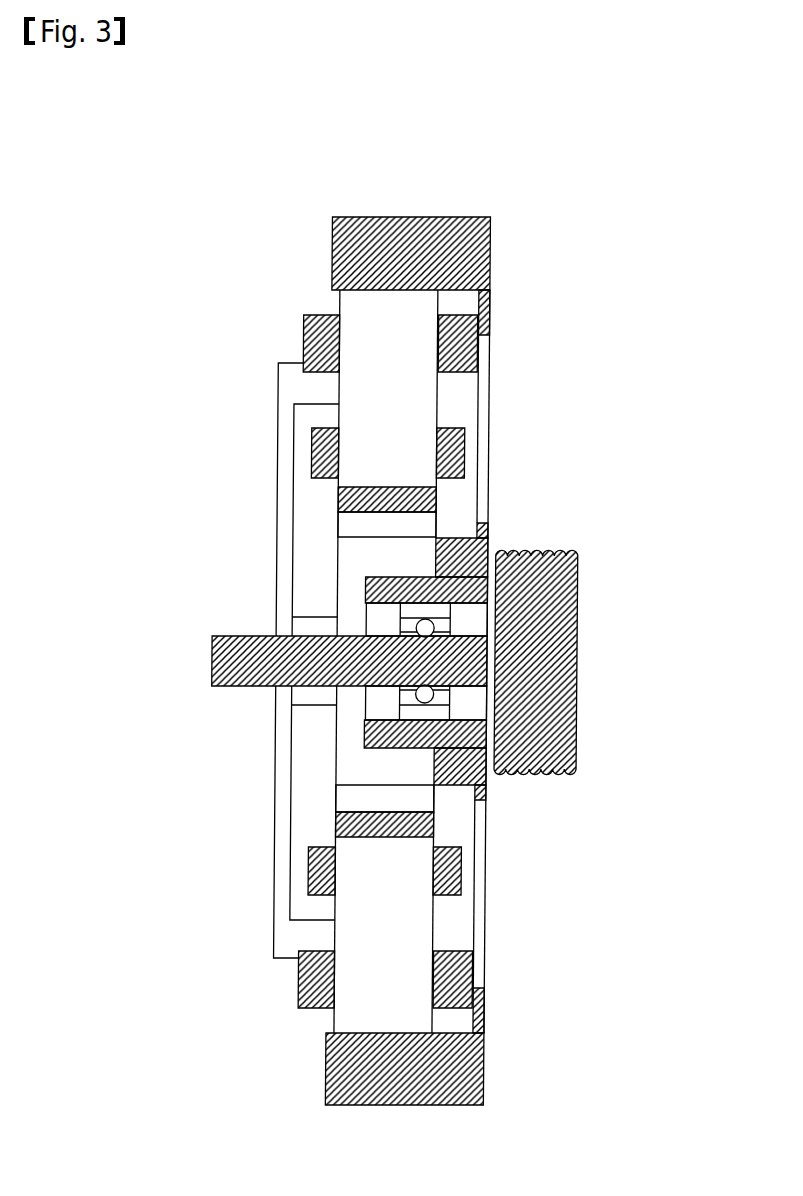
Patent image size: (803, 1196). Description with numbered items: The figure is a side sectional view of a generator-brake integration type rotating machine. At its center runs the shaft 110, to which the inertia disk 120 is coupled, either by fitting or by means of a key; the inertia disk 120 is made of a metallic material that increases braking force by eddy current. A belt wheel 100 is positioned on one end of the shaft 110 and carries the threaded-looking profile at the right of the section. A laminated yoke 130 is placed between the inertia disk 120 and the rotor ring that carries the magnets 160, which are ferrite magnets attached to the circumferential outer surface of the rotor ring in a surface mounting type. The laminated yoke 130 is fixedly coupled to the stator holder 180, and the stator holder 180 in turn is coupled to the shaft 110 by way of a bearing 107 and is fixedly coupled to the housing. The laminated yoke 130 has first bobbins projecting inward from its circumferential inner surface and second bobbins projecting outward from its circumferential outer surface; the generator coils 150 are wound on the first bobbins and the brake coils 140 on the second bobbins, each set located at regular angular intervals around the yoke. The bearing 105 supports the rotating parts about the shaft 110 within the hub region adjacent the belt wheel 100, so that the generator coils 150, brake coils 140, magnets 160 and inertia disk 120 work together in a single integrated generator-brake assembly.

The belt wheel 100 is at (572, 552).
The bearing 105 is at (443, 630).
The bearing 107 is at (318, 622).
The shaft 110 is at (227, 657).
The inertia disk 120 is at (469, 1065).
The laminated yoke 130 is at (405, 930).
The brake coils 140 is at (320, 332).
The generator coils 150 is at (330, 451).
The magnets 160 is at (433, 488).
The stator holder 180 is at (281, 480).